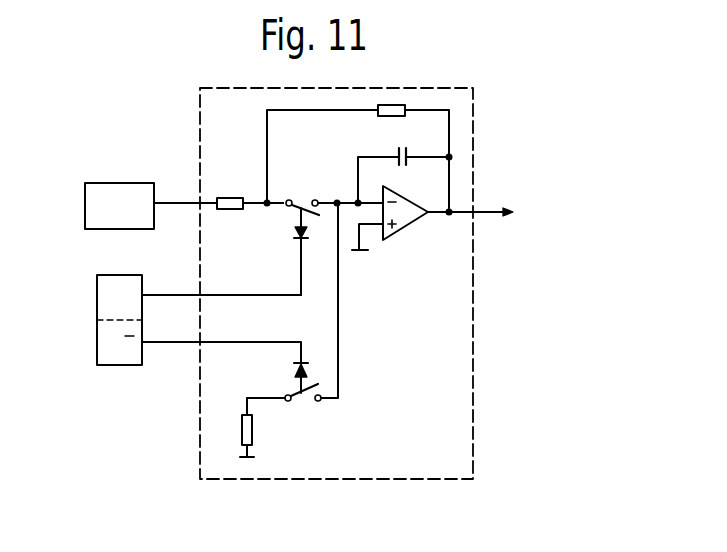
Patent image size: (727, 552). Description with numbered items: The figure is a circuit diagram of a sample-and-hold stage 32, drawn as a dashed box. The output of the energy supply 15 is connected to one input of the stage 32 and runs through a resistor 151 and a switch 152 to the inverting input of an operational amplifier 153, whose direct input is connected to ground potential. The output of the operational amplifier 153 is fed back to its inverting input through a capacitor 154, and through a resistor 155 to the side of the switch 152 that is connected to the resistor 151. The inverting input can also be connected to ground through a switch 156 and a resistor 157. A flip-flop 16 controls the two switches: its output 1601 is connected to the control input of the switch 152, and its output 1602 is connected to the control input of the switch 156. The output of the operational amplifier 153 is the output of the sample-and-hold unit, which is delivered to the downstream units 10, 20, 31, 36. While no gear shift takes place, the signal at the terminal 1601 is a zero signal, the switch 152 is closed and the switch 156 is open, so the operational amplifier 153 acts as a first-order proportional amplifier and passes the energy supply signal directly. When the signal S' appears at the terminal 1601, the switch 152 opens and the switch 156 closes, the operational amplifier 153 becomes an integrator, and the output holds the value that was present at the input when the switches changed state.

The energy supply 15 is at (117, 195).
The flip-flop 16 is at (106, 293).
The output of flip-flop 1601 is at (143, 296).
The output of flip-flop 1602 is at (143, 343).
The resistor 151 is at (240, 173).
The switch 152 is at (306, 208).
The operational amplifier 153 is at (407, 213).
The capacitor 154 is at (403, 147).
The resistor 155 is at (393, 110).
The switch 156 is at (305, 390).
The resistor 157 is at (252, 428).
The sample-and-hold stage 32 is at (474, 315).
The output to element 10 is at (522, 211).
The output to element 20 is at (522, 211).
The output to element 31 is at (522, 211).
The output to element 36 is at (522, 211).